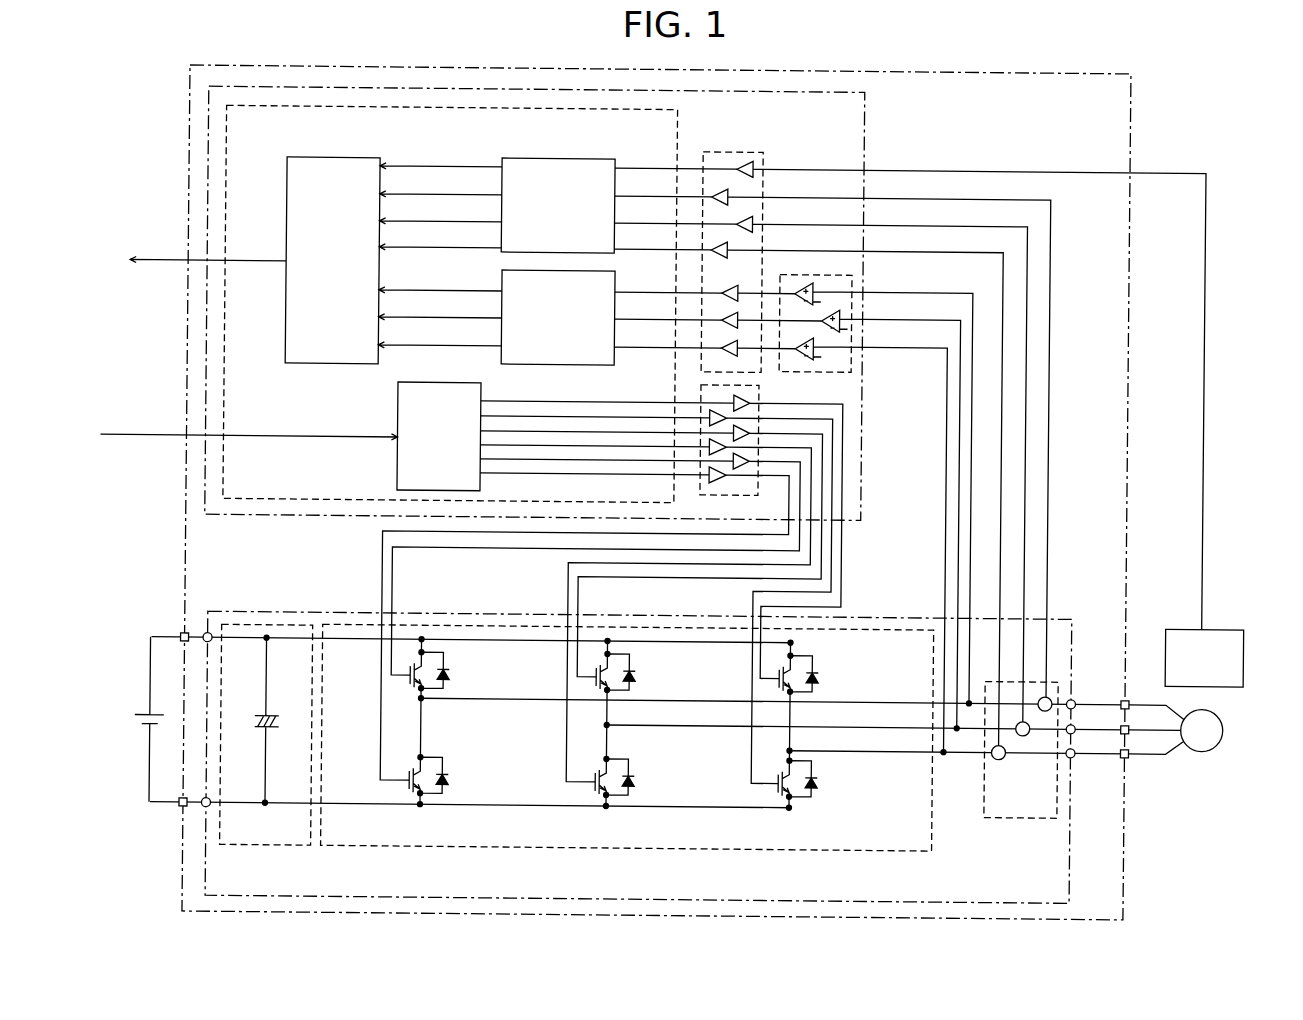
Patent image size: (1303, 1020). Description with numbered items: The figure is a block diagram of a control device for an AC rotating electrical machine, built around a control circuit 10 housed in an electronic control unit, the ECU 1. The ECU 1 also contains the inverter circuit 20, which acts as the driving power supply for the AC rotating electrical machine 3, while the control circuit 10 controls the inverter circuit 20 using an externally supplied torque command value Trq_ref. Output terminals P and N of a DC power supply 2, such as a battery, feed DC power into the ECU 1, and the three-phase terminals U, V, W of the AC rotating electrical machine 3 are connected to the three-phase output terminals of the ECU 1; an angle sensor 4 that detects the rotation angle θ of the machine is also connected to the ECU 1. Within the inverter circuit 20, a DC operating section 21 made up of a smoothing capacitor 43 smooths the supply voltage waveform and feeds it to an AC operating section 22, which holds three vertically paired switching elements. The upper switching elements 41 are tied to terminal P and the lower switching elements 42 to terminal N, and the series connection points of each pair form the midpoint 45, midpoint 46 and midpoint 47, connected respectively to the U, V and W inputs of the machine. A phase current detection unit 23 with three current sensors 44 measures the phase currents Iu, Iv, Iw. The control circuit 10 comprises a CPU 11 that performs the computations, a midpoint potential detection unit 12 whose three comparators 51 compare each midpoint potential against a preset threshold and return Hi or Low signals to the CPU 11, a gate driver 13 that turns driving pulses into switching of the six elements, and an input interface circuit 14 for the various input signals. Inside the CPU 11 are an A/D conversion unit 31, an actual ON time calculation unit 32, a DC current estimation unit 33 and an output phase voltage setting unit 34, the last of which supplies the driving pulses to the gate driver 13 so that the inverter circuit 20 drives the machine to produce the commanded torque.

The electronic control unit (ECU) 1 is at (1134, 93).
The DC power supply 2 is at (141, 718).
The AC rotating electrical machine 3 is at (1230, 712).
The angle sensor 4 is at (1226, 620).
The control circuit 10 is at (865, 102).
The CPU 11 is at (678, 110).
The midpoint potential detection unit 12 is at (830, 269).
The gate driver 13 is at (762, 385).
The input interface circuit 14 is at (764, 150).
The inverter circuit 20 is at (1077, 877).
The DC operating section 21 is at (270, 844).
The AC operating section 22 is at (690, 844).
The phase current detection unit 23 is at (1022, 810).
The A/D conversion unit 31 is at (555, 155).
The actual ON time calculation unit 32 is at (560, 361).
The DC current estimation unit 33 is at (340, 156).
The output phase voltage setting unit 34 is at (401, 396).
The upper switching elements 41 is at (449, 648).
The lower switching elements 42 is at (445, 803).
The smoothing capacitor 43 is at (276, 716).
The current sensor 44 is at (1056, 690).
The midpoint 45 is at (427, 696).
The midpoint 46 is at (613, 721).
The midpoint 47 is at (796, 745).
The comparator 51 is at (816, 353).